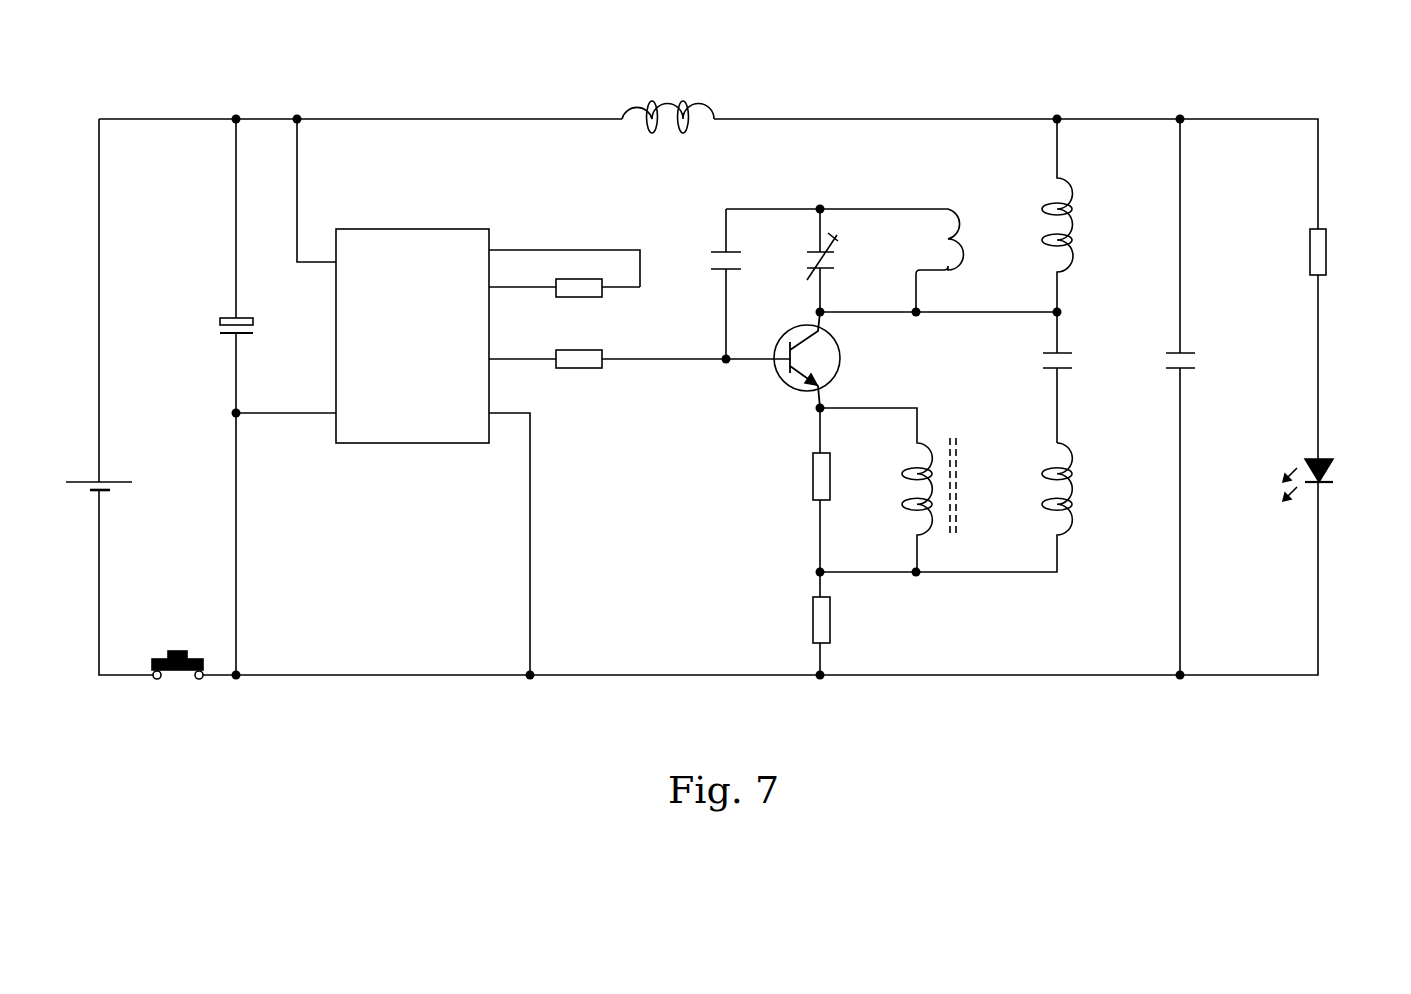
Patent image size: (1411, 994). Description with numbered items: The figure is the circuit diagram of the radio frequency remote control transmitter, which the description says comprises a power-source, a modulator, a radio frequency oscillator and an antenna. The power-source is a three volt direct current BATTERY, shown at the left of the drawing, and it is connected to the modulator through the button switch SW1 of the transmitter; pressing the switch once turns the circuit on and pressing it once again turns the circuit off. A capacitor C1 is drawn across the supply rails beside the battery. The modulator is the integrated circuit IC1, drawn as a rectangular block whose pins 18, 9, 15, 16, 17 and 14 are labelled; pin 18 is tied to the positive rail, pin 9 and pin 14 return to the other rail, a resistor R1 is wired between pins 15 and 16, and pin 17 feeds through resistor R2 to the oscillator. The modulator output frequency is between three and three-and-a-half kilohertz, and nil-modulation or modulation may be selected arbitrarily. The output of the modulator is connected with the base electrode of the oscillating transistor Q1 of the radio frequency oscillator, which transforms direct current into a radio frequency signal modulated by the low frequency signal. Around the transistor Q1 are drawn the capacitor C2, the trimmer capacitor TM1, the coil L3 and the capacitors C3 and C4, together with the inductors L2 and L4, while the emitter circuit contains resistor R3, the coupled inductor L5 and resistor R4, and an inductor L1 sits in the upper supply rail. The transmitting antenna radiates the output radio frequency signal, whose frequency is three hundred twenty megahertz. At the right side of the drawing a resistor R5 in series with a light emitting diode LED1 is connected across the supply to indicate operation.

The electrolytic capacitor 100uF C1 is at (199, 397).
The integrated circuit IC1 is at (412, 336).
The IC1 pin 18 is at (316, 206).
The IC1 pin 9 is at (286, 397).
The IC1 pin 15 is at (564, 258).
The IC1 pin 16 is at (564, 277).
The IC1 pin 17 is at (522, 349).
The IC1 pin 14 is at (509, 533).
The resistor 680K R1 is at (579, 290).
The resistor 27K R2 is at (673, 362).
The resistor 220K R3 is at (849, 490).
The resistor 33 R4 is at (839, 623).
The resistor 1K R5 is at (1337, 344).
The capacitor 5P C2 is at (829, 284).
The capacitor 0.5P C3 is at (1090, 377).
The capacitor 0.01uF C4 is at (1220, 397).
The trimmer capacitor 10P TM1 is at (847, 260).
The transistor 9016F Q1 is at (836, 360).
The inductor 1.5uH L1 is at (669, 134).
The inductor 1.5uH L2 is at (1092, 215).
The coil 2.5T L3 is at (966, 260).
The inductor 0.1uH L4 is at (985, 507).
The inductor 3.5uH L5 is at (920, 490).
The light emitting diode LED1 is at (1339, 470).
The button switch SW1 is at (177, 646).
The 3V battery CR2032 BATTERY is at (130, 497).